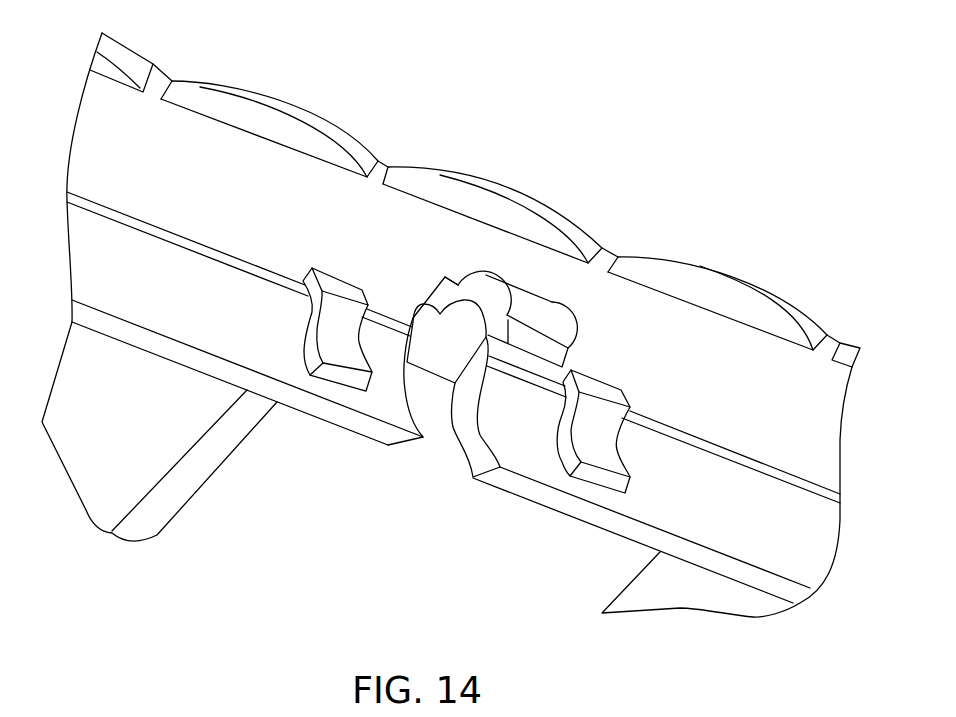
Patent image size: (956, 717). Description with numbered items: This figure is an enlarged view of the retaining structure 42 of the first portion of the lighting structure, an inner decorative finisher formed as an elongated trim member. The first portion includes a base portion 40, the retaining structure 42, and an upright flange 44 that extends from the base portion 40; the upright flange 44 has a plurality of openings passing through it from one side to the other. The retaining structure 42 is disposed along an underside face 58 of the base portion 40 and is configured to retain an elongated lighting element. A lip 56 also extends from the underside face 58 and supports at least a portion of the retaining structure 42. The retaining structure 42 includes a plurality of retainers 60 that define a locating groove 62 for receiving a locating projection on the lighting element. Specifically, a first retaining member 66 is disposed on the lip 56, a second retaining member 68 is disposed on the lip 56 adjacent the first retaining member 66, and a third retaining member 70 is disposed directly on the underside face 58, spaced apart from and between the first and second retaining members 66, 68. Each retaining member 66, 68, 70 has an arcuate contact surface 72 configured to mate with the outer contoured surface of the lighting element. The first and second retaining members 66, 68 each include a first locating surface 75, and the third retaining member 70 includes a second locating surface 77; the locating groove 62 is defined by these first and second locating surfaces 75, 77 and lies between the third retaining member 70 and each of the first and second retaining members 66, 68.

The base portion 40 is at (112, 136).
The retaining structure 42 is at (433, 458).
The upright flange 44 is at (548, 207).
The lip 56 is at (148, 298).
The underside face 58 is at (628, 307).
The retainers 60 is at (615, 361).
The locating groove 62 is at (401, 292).
The first retaining member 66 is at (342, 383).
The second retaining member 68 is at (595, 478).
The third retaining member 70 is at (525, 303).
The arcuate contact surface 72 is at (333, 332).
The first locating surface 75 is at (338, 287).
The second locating surface 77 is at (418, 305).